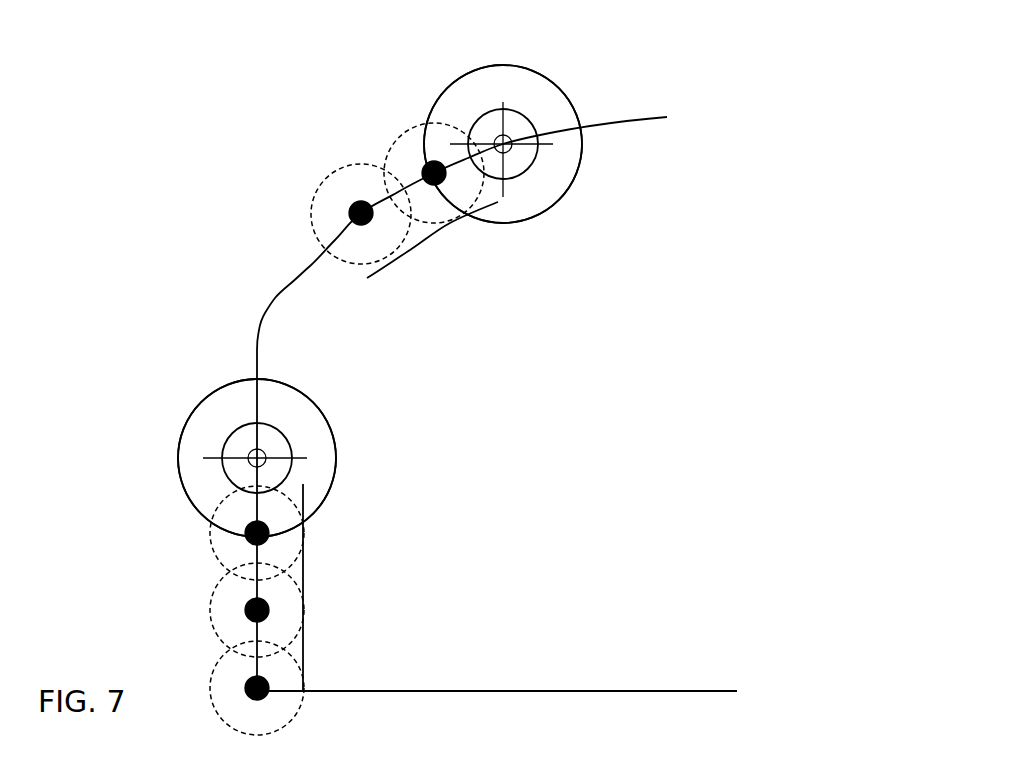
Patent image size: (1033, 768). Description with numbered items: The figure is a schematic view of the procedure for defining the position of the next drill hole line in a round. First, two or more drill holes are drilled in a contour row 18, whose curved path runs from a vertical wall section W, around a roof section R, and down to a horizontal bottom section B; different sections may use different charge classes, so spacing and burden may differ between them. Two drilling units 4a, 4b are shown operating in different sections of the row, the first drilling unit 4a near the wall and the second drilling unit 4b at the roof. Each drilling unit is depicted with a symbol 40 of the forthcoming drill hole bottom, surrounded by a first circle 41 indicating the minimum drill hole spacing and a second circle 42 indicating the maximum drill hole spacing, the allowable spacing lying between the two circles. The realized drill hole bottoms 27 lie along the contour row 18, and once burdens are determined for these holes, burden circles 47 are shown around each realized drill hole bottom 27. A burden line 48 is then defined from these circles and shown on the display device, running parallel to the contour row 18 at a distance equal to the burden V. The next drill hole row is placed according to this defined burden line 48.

The contour row 18 is at (174, 210).
The drilling unit 4a is at (160, 417).
The drilling unit 4b is at (564, 60).
The symbol of a forthcoming drill hole bottom 40 is at (263, 455).
The first circle 41 is at (275, 427).
The second circle 42 is at (278, 382).
The drill hole bottom 27 is at (248, 617).
The burden circle 47 is at (212, 607).
The burden line 48 is at (303, 575).
The burden V is at (260, 636).
The bottom section B is at (548, 662).
The roof section R is at (346, 59).
The wall section W is at (95, 506).